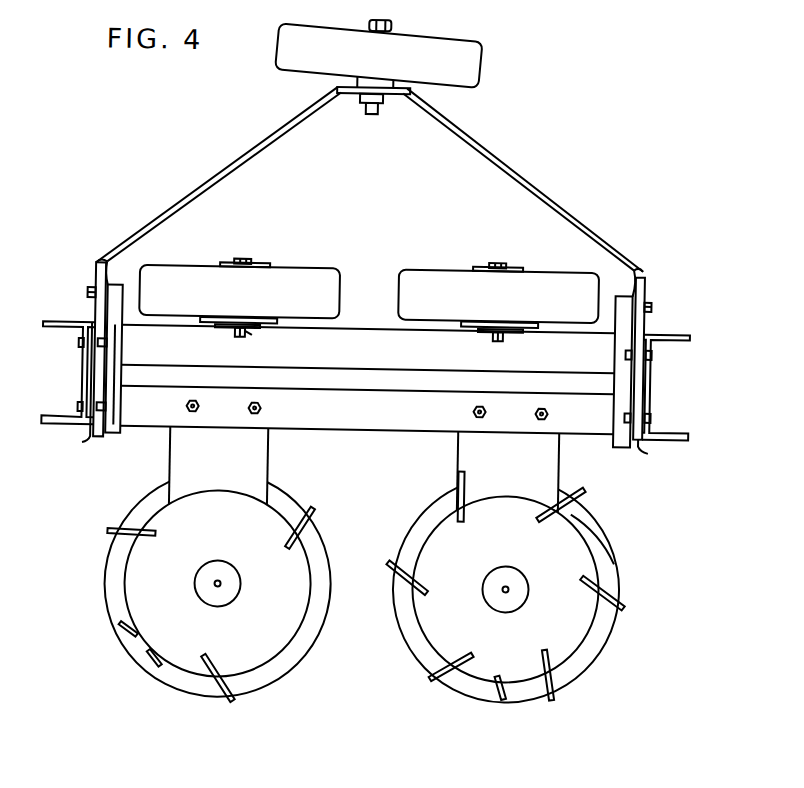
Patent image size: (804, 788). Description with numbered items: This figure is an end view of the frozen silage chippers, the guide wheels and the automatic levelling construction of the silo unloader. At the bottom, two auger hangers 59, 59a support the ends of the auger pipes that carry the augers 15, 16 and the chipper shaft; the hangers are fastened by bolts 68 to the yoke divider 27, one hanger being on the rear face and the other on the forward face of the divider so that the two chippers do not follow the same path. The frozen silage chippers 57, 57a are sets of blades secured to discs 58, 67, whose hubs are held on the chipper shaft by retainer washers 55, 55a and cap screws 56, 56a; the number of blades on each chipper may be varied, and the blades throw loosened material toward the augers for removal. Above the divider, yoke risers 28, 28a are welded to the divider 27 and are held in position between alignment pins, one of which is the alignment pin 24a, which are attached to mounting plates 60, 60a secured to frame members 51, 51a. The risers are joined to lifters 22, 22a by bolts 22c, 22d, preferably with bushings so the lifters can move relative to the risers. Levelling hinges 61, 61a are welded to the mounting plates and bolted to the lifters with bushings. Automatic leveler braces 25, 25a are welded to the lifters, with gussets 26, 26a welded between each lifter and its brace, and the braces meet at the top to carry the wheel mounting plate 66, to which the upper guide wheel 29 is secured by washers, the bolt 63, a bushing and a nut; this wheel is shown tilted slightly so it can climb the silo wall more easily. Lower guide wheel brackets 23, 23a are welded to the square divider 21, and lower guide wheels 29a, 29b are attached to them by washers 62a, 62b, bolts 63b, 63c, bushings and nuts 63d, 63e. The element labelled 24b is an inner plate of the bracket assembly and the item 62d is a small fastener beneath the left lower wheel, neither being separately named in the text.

The auger 15 is at (406, 636).
The auger 16 is at (109, 590).
The square divider 21 is at (362, 328).
The lifter 22 is at (95, 272).
The lifter 22a is at (646, 278).
The bolt 22c is at (87, 297).
The bolt 22d is at (651, 302).
The lower guide wheel bracket 23 is at (274, 330).
The lower guide wheel bracket 23a is at (470, 330).
The alignment pin 24a is at (616, 350).
The left inner plate 24b is at (123, 344).
The automatic leveler brace 25 is at (298, 112).
The automatic leveler brace 25a is at (455, 127).
The gusset 26 is at (219, 173).
The gusset 26a is at (560, 206).
The yoke divider 27 is at (396, 431).
The yoke riser 28 is at (142, 260).
The yoke riser 28a is at (598, 276).
The guide wheel 29 is at (476, 64).
The lower guide wheel 29a is at (335, 266).
The lower guide wheel 29b is at (405, 268).
The frame member 51 is at (42, 326).
The frame member 51a is at (690, 332).
The retainer washer 55 is at (199, 577).
The retainer washer 55a is at (491, 574).
The cap screw 56 is at (225, 585).
The cap screw 56a is at (513, 587).
The frozen silage chipper 57 is at (112, 535).
The frozen silage chipper 57a is at (630, 600).
The disc 58 is at (152, 664).
The auger hanger 59 is at (171, 446).
The auger hanger 59a is at (459, 442).
The mounting plate 60 is at (646, 446).
The mounting plate 60a is at (90, 445).
The levelling hinge 61 is at (120, 266).
The levelling hinge 61a is at (628, 270).
The washer 62a is at (238, 262).
The washer 62b is at (480, 265).
The left lower bolt 62d is at (237, 335).
The bolt 63 is at (390, 25).
The bolt 63b is at (258, 262).
The bolt 63c is at (497, 262).
The nut 63d is at (250, 336).
The nut 63e is at (493, 337).
The wheel mounting plate 66 is at (357, 104).
The disc 67 is at (602, 540).
The bolts 68 is at (195, 416).